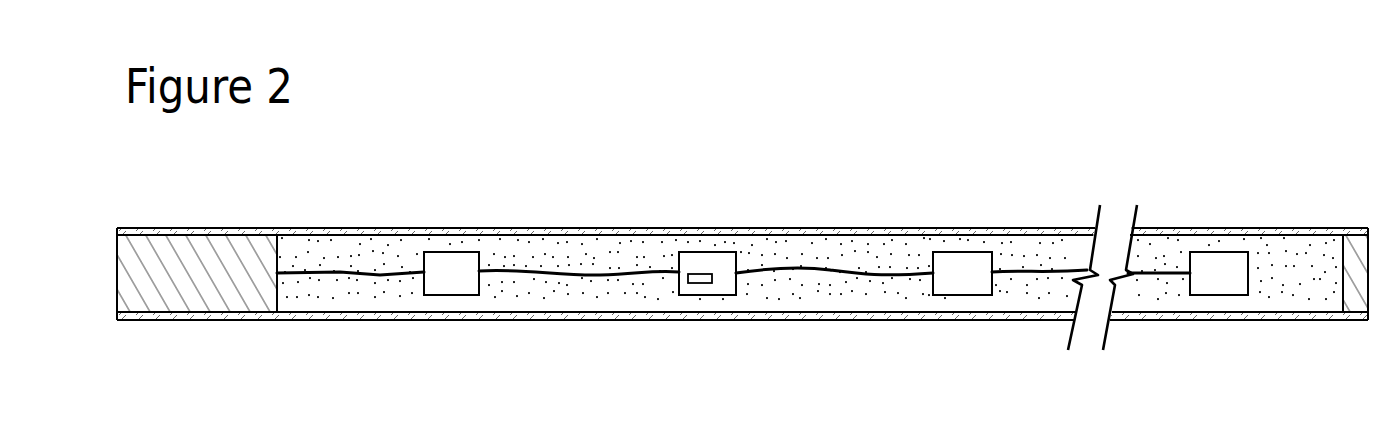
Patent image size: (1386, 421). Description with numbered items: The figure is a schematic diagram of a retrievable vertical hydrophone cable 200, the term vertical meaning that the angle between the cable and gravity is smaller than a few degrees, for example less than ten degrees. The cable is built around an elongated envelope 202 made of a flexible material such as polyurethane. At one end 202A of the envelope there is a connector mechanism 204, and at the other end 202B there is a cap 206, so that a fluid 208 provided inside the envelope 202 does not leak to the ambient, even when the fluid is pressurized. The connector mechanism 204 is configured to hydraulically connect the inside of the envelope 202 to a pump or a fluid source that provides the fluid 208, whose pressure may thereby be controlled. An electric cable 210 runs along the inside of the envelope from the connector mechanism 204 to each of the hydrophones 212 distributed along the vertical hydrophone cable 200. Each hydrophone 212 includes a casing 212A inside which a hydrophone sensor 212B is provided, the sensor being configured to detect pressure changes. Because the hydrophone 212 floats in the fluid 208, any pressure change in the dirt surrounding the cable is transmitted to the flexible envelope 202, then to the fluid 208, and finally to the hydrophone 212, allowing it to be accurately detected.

The retrievable vertical hydrophone cable 200 is at (688, 103).
The envelope 202 is at (480, 232).
The one end of the envelope 202A is at (178, 232).
The other end of the envelope 202B is at (1360, 230).
The connector mechanism 204 is at (188, 290).
The cap 206 is at (1355, 298).
The fluid 208 is at (853, 295).
The electric cable 210 is at (345, 273).
The hydrophone 212 is at (450, 278).
The casing 212A is at (728, 252).
The hydrophone sensor 212B is at (698, 273).